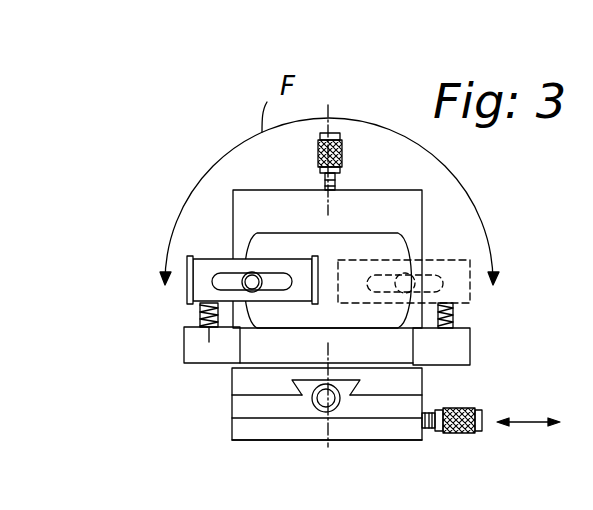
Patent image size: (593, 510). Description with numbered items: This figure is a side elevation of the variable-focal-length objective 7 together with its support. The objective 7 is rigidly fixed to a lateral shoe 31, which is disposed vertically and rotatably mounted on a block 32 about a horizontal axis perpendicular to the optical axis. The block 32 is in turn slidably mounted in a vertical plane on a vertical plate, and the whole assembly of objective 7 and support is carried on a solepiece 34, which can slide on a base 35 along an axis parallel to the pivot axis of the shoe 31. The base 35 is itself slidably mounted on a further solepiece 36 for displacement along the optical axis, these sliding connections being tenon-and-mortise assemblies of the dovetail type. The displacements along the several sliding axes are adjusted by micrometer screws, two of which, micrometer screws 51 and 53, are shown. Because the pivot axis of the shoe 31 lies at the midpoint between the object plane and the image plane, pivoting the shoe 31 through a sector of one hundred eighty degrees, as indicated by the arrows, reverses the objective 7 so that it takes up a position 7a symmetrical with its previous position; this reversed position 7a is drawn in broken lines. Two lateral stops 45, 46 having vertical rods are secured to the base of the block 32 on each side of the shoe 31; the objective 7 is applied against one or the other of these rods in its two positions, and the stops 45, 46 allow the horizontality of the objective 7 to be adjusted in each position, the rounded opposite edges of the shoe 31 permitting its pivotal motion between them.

The objective 7 is at (212, 249).
The reversed position of objective 7a is at (450, 251).
The lateral shoe 31 is at (382, 225).
The block 32 is at (395, 200).
The solepiece 34 is at (410, 385).
The base 35 is at (243, 407).
The solepiece 36 is at (280, 428).
The lateral stop 45 is at (188, 315).
The lateral stop 46 is at (462, 318).
The micrometer screw 51 is at (342, 150).
The micrometer screw 53 is at (460, 433).